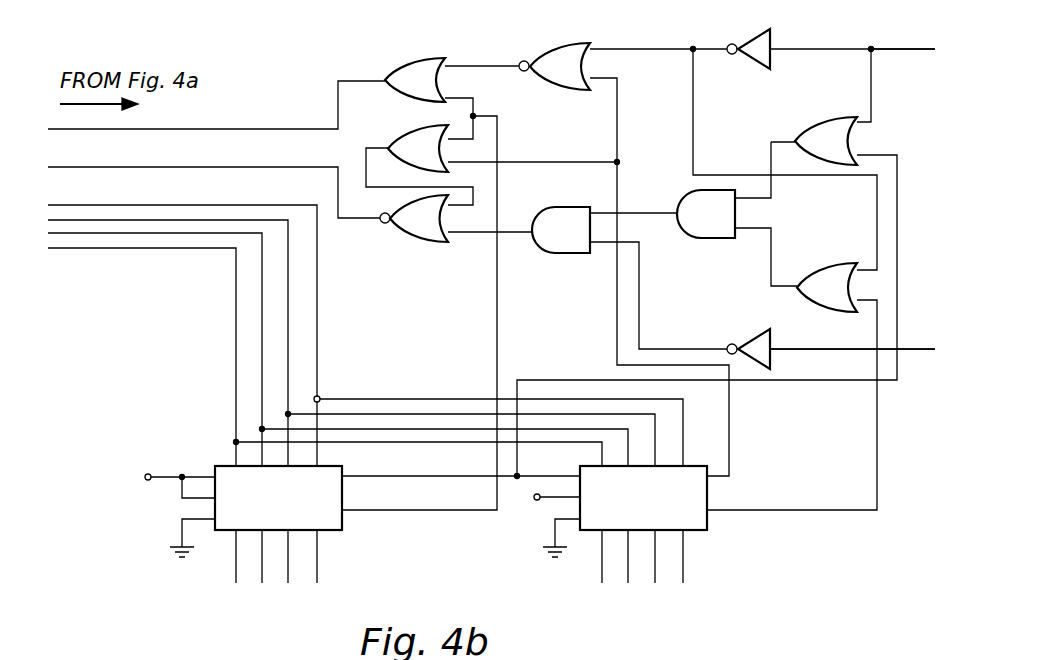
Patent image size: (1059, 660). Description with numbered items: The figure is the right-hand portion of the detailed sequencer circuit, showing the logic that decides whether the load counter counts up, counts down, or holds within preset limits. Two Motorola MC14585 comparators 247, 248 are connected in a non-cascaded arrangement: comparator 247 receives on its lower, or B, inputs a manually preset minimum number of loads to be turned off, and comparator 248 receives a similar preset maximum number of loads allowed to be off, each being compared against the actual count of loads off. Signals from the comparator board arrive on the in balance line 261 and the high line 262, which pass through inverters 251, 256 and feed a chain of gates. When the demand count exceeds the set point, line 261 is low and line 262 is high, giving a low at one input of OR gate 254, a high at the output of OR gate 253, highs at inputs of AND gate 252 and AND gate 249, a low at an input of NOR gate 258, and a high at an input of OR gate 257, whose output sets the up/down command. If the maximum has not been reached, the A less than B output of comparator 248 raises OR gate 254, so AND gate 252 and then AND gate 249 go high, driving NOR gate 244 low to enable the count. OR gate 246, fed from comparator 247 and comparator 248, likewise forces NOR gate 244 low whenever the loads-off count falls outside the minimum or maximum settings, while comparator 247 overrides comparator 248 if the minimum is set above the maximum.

The NOR gate 244 is at (415, 243).
The OR gate 246 is at (425, 125).
The comparator 247 is at (344, 530).
The comparator 248 is at (708, 530).
The AND gate 249 is at (573, 256).
The inverter 251 is at (752, 330).
The AND gate 252 is at (688, 192).
The OR gate 253 is at (832, 117).
The OR gate 254 is at (833, 262).
The inverter 256 is at (752, 30).
The OR gate 257 is at (412, 57).
The NOR gate 258 is at (546, 45).
The in balance line 261 is at (925, 356).
The high line 262 is at (909, 35).